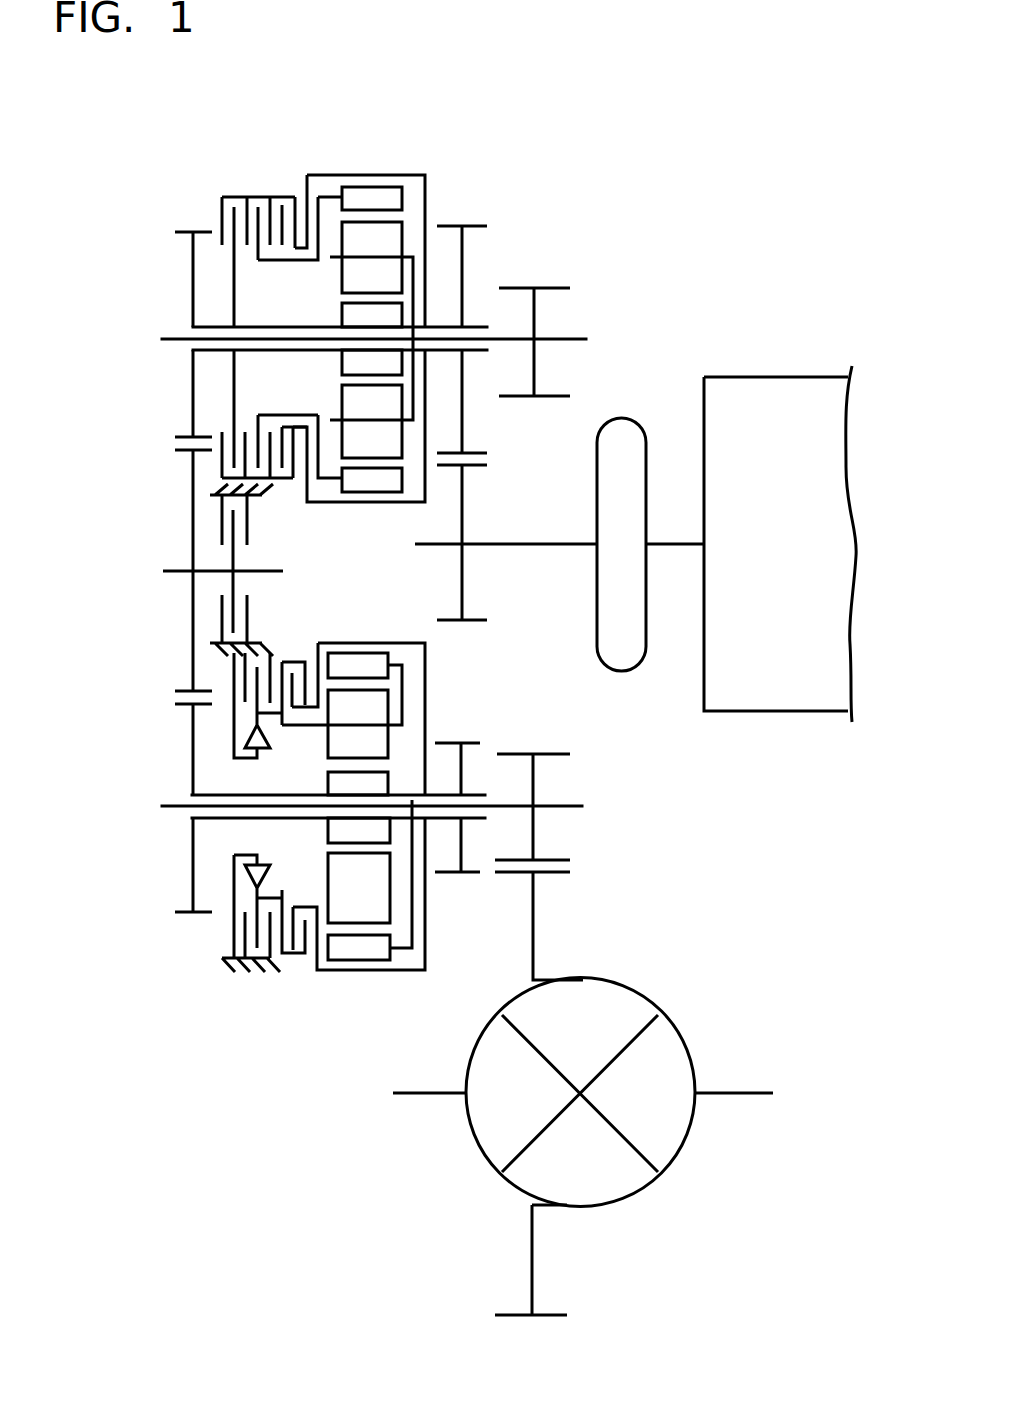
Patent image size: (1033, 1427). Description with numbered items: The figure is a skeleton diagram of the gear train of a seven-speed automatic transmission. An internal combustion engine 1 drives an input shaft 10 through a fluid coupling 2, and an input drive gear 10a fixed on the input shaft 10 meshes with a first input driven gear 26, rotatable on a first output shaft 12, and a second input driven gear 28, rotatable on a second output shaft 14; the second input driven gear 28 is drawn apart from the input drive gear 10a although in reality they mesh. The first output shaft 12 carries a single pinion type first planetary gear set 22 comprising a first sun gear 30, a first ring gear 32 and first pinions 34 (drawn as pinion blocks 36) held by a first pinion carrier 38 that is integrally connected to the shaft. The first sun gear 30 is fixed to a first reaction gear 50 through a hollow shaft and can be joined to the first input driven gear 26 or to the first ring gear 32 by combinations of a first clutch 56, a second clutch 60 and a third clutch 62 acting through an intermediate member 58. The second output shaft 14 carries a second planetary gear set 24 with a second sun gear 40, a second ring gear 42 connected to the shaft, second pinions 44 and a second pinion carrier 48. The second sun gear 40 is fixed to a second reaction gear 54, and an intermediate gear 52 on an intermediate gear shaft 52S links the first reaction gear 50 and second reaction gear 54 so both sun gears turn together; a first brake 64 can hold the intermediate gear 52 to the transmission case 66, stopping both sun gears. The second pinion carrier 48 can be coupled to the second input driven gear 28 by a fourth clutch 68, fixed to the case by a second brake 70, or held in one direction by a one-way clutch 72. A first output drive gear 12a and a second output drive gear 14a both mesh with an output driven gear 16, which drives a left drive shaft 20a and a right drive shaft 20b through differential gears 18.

The internal combustion engine 1 is at (808, 404).
The fluid coupling 2 is at (628, 636).
The input shaft 10 is at (559, 547).
The input drive gear 10a is at (462, 593).
The first output shaft 12 is at (563, 338).
The first output drive gear 12a is at (552, 287).
The second output shaft 14 is at (562, 807).
The second output drive gear 14a is at (558, 858).
The output driven gear 16 is at (533, 902).
The differential gears 18 is at (667, 1060).
The left drive shaft 20a is at (425, 1095).
The right drive shaft 20b is at (753, 1095).
The first planetary gear set 22 is at (378, 120).
The second planetary gear set 24 is at (346, 990).
The first input driven gear 26 is at (480, 222).
The second input driven gear 28 is at (467, 874).
The first sun gear 30 is at (392, 317).
The first ring gear 32 is at (377, 190).
The first pinions 34 is at (388, 237).
The pinion 36 is at (372, 421).
The first pinion carrier 38 is at (413, 409).
The second sun gear 40 is at (333, 782).
The second ring gear 42 is at (377, 952).
The second pinions 44 is at (383, 918).
The second pinion carrier 48 is at (313, 889).
The first reaction gear 50 is at (193, 270).
The intermediate gear 52 is at (192, 523).
The intermediate gear shaft 52S is at (168, 571).
The second reaction gear 54 is at (190, 737).
The first clutch 56 is at (283, 204).
The intermediate member 58 is at (222, 222).
The second clutch 60 is at (258, 206).
The third clutch 62 is at (230, 206).
The first brake 64 is at (242, 613).
The transmission case 66 is at (262, 648).
The fourth clutch 68 is at (298, 936).
The second brake 70 is at (250, 935).
The one-way clutch 72 is at (252, 878).